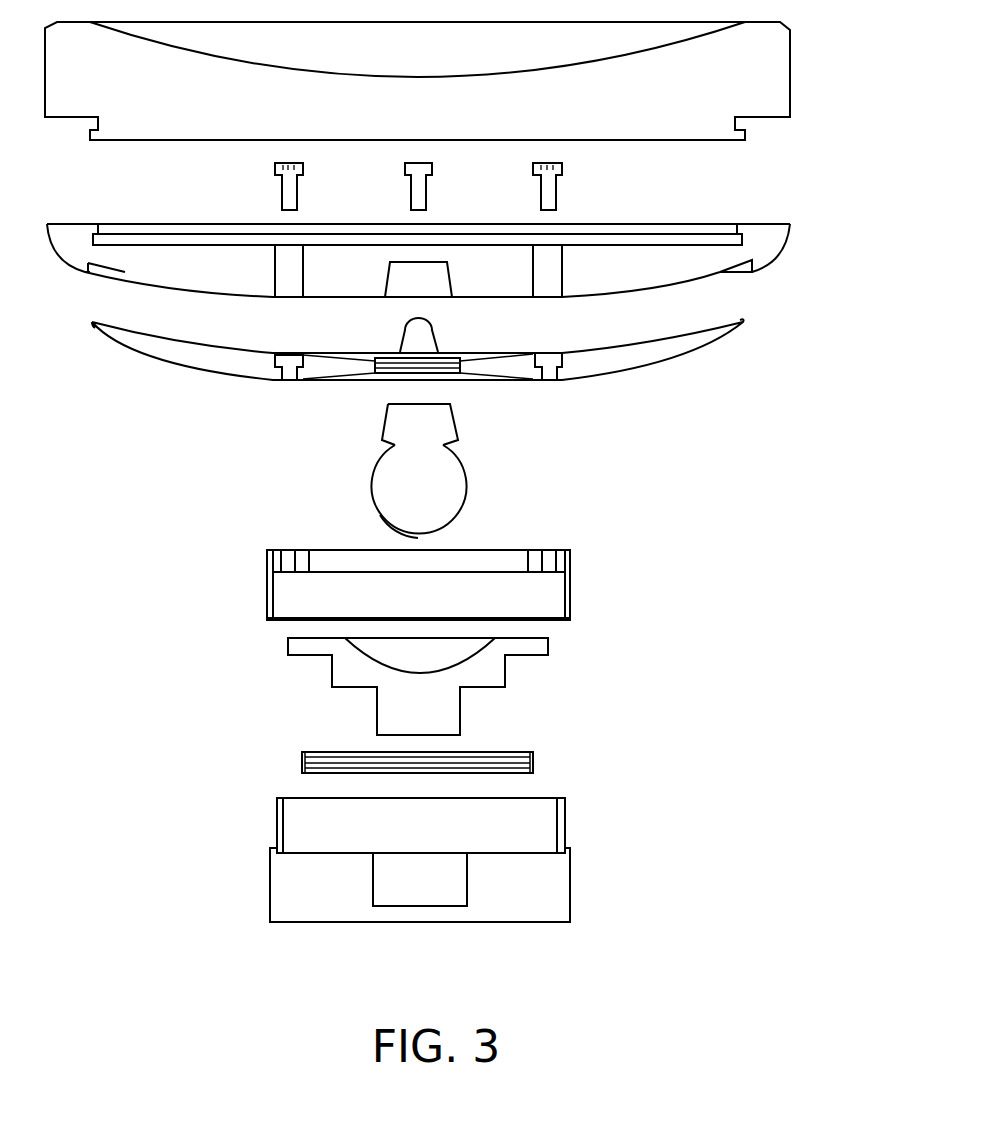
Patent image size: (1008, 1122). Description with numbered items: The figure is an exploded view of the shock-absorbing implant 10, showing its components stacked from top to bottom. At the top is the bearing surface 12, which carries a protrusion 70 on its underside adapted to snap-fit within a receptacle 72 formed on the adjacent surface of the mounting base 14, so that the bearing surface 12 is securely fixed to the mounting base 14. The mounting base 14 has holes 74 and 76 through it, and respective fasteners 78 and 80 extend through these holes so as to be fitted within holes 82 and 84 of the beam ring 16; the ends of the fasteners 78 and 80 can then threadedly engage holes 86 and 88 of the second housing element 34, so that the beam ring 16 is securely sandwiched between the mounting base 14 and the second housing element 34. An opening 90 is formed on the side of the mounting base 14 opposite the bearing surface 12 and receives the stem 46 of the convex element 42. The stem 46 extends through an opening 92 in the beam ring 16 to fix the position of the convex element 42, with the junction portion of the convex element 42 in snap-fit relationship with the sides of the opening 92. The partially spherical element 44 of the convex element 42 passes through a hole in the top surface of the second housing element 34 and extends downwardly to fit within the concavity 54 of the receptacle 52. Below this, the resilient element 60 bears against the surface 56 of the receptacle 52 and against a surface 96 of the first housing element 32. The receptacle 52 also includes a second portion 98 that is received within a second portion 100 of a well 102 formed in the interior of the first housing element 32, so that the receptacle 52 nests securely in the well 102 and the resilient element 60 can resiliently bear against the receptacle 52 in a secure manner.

The lens assembly 10 is at (858, 184).
The bearing surface 12 is at (790, 75).
The mounting base 14 is at (763, 258).
The beam ring 16 is at (647, 362).
The first housing element 32 is at (572, 903).
The second housing element 34 is at (570, 605).
The convex element 42 is at (458, 495).
The partially spherical element 44 is at (395, 508).
The stem 46 is at (449, 423).
The receptacle 52 is at (505, 680).
The concavity 54 is at (425, 672).
The surface 56 is at (548, 645).
The resilient element 60 is at (300, 763).
The protrusion 70 is at (700, 143).
The receptacle 72 is at (125, 224).
The hole 74 is at (282, 297).
The hole 76 is at (548, 297).
The fastener 78 is at (280, 187).
The fastener 80 is at (562, 190).
The hole 82 is at (285, 380).
The hole 84 is at (548, 380).
The hole 86 is at (290, 548).
The hole 88 is at (533, 548).
The opening 90 is at (437, 287).
The opening 92 is at (388, 378).
The surface 96 is at (553, 866).
The second portion 98 is at (462, 714).
The second portion 100 is at (402, 906).
The well 102 is at (302, 822).